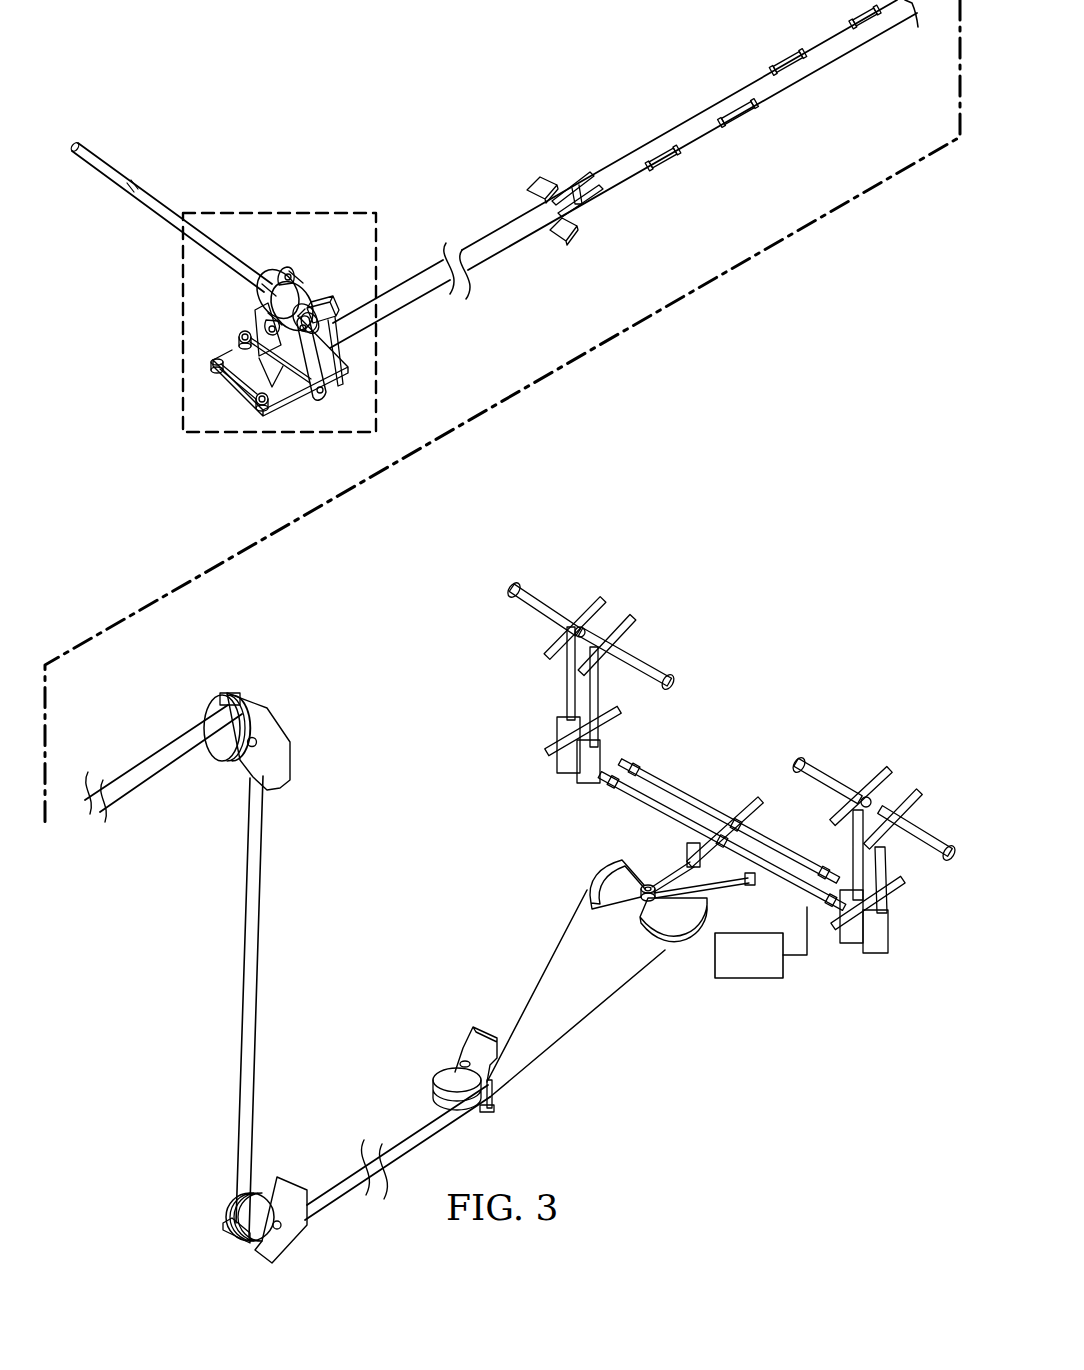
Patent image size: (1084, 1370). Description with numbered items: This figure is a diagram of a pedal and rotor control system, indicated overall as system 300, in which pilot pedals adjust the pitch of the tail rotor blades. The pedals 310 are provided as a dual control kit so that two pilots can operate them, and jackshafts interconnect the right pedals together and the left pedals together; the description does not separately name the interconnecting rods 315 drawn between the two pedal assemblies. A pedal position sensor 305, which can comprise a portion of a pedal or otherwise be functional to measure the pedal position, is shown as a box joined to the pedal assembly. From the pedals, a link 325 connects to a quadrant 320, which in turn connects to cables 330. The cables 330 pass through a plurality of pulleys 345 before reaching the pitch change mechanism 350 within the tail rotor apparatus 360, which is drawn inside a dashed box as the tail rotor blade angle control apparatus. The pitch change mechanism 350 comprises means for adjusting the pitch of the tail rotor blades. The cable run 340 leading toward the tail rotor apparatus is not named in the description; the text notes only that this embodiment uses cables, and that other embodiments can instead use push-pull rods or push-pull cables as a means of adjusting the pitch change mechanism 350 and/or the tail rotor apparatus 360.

The cable drive system 300 is at (284, 45).
The pedal position sensor 305 is at (757, 978).
The pedals 310 is at (548, 600).
The rods 315 is at (665, 785).
The quadrant 320 is at (593, 862).
The link 325 is at (656, 878).
The cables 330 is at (150, 750).
The cable 340 is at (705, 140).
The pulleys 345 is at (256, 712).
The pitch change mechanism 350 is at (306, 285).
The tail rotor blade angle control apparatus 360 is at (262, 213).